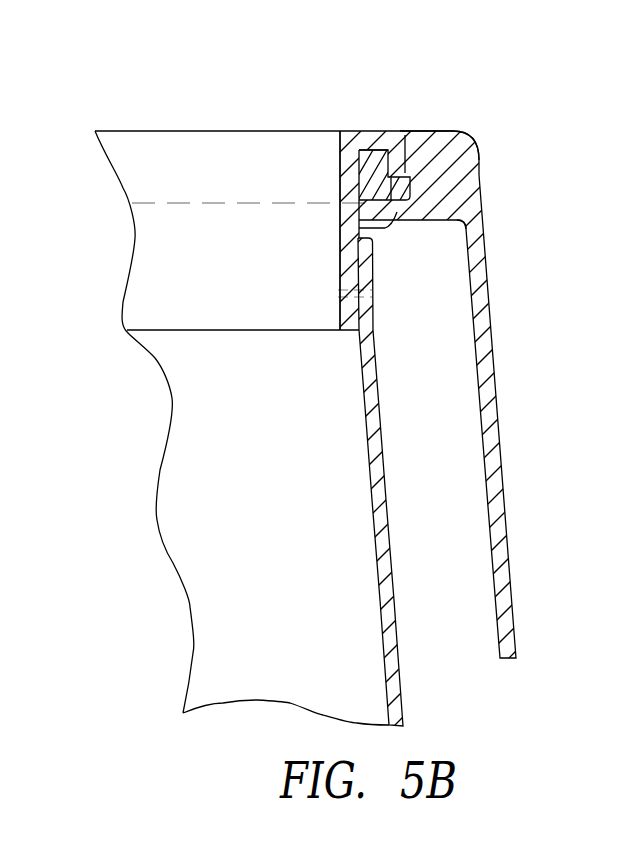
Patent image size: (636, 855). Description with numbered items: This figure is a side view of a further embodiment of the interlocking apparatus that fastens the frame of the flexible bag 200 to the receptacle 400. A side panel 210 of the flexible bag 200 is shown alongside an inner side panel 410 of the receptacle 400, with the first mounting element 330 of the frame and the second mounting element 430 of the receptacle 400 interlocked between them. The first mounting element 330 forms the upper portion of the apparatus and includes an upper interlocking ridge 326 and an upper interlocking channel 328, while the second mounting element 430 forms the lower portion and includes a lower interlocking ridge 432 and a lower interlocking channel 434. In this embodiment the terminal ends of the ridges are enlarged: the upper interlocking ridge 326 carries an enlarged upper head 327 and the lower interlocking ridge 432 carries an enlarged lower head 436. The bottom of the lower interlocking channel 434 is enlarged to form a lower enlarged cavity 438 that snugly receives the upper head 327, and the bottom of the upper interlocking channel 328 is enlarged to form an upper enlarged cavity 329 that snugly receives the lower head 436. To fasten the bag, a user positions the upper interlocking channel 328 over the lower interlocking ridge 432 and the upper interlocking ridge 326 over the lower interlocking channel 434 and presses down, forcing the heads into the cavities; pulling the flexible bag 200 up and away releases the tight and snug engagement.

The flexible bag 200 is at (285, 484).
The side panel 210 is at (386, 590).
The upper interlocking ridge 326 is at (414, 160).
The enlarged upper head 327 is at (359, 228).
The upper interlocking channel 328 is at (361, 185).
The upper enlarged cavity 329 is at (398, 162).
The first mounting element 330 is at (350, 158).
The receptacle 400 is at (318, 392).
The inner side panel 410 is at (500, 451).
The second mounting element 430 is at (445, 185).
The lower interlocking ridge 432 is at (357, 190).
The lower interlocking channel 434 is at (412, 136).
The enlarged lower head 436 is at (372, 183).
The lower enlarged cavity 438 is at (361, 213).